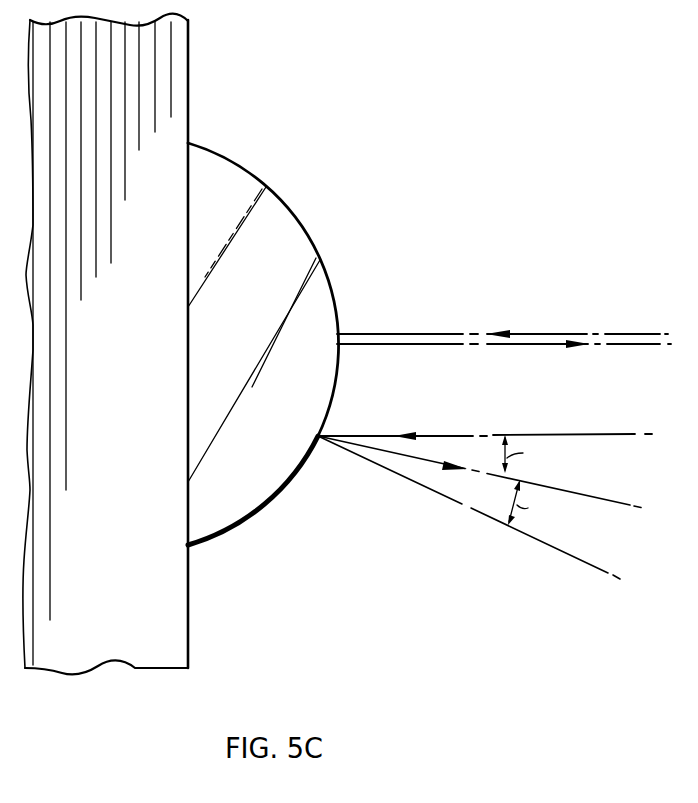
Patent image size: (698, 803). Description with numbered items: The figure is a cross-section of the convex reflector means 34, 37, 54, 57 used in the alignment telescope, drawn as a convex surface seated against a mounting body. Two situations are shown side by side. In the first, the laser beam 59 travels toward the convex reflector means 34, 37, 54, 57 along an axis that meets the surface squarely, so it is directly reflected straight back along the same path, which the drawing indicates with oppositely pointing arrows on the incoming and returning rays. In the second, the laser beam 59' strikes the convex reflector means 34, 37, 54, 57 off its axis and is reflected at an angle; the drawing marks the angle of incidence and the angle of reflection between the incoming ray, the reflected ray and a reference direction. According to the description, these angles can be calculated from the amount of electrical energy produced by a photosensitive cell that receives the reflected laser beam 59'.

The convex reflector means 34 is at (282, 344).
The convex reflector means 37 is at (282, 344).
The convex reflector means 54 is at (282, 344).
The convex reflector means 57 is at (298, 220).
The laser beam 59 is at (504, 319).
The laser beam 59' is at (485, 484).